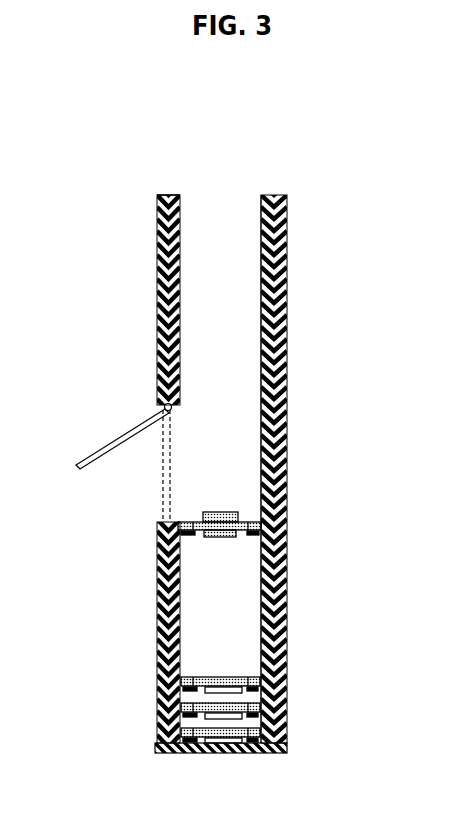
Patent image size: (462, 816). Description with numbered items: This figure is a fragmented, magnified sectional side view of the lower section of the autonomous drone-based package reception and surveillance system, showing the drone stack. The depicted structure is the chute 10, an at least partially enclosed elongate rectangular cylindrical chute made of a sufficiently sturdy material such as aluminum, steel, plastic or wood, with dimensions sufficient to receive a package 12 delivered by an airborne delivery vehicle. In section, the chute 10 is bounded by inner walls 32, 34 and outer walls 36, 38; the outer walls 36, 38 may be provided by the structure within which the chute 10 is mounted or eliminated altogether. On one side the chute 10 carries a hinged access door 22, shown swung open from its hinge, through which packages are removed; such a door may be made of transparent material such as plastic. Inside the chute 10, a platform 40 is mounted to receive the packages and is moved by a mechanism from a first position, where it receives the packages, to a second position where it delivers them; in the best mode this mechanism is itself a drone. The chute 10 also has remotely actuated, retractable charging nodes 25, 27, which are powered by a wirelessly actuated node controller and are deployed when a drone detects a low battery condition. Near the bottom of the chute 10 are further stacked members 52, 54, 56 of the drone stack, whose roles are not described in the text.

The chute 10 is at (253, 478).
The package 12 is at (240, 516).
The hinged access door 22 is at (123, 429).
The retractable charging node 25 is at (189, 535).
The retractable charging node 27 is at (255, 540).
The inner wall 32 is at (181, 212).
The inner wall 34 is at (261, 277).
The outer wall 36 is at (157, 280).
The outer wall 38 is at (287, 312).
The platform 40 is at (232, 535).
The second shelf module 52 is at (244, 709).
The third shelf module 54 is at (249, 731).
The bottom module 56 is at (212, 733).